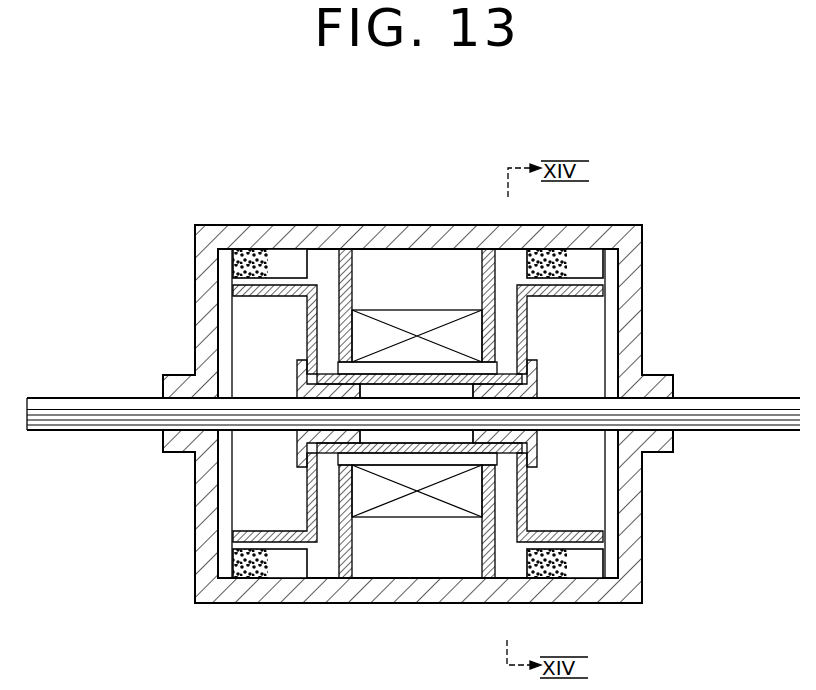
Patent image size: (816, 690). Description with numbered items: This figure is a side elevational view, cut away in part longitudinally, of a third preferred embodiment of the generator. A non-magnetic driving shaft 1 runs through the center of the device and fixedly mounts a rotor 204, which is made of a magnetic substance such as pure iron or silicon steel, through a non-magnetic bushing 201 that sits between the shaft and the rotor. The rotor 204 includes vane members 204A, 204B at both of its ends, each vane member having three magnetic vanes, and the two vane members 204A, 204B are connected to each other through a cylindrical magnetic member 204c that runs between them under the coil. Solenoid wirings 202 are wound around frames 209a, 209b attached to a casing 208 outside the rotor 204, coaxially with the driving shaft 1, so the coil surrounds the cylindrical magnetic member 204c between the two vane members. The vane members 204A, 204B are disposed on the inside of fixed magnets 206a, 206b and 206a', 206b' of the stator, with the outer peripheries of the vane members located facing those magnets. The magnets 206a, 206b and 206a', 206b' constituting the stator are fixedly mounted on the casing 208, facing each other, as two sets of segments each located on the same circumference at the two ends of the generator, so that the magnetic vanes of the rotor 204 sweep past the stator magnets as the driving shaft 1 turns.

The driving shaft 1 is at (80, 420).
The bushing 201 is at (540, 383).
The solenoid wirings 202 is at (410, 317).
The rotor 204 is at (612, 292).
The vane member 204A is at (570, 298).
The vane member 204B is at (270, 296).
The cylindrical magnetic member 204c is at (383, 457).
The fixed magnet 206a is at (600, 229).
The fixed magnet 206a' is at (285, 218).
The fixed magnet 206b is at (614, 606).
The fixed magnet 206b' is at (245, 609).
The casing 208 is at (215, 225).
The frame 209a is at (488, 265).
The frame 209b is at (345, 268).